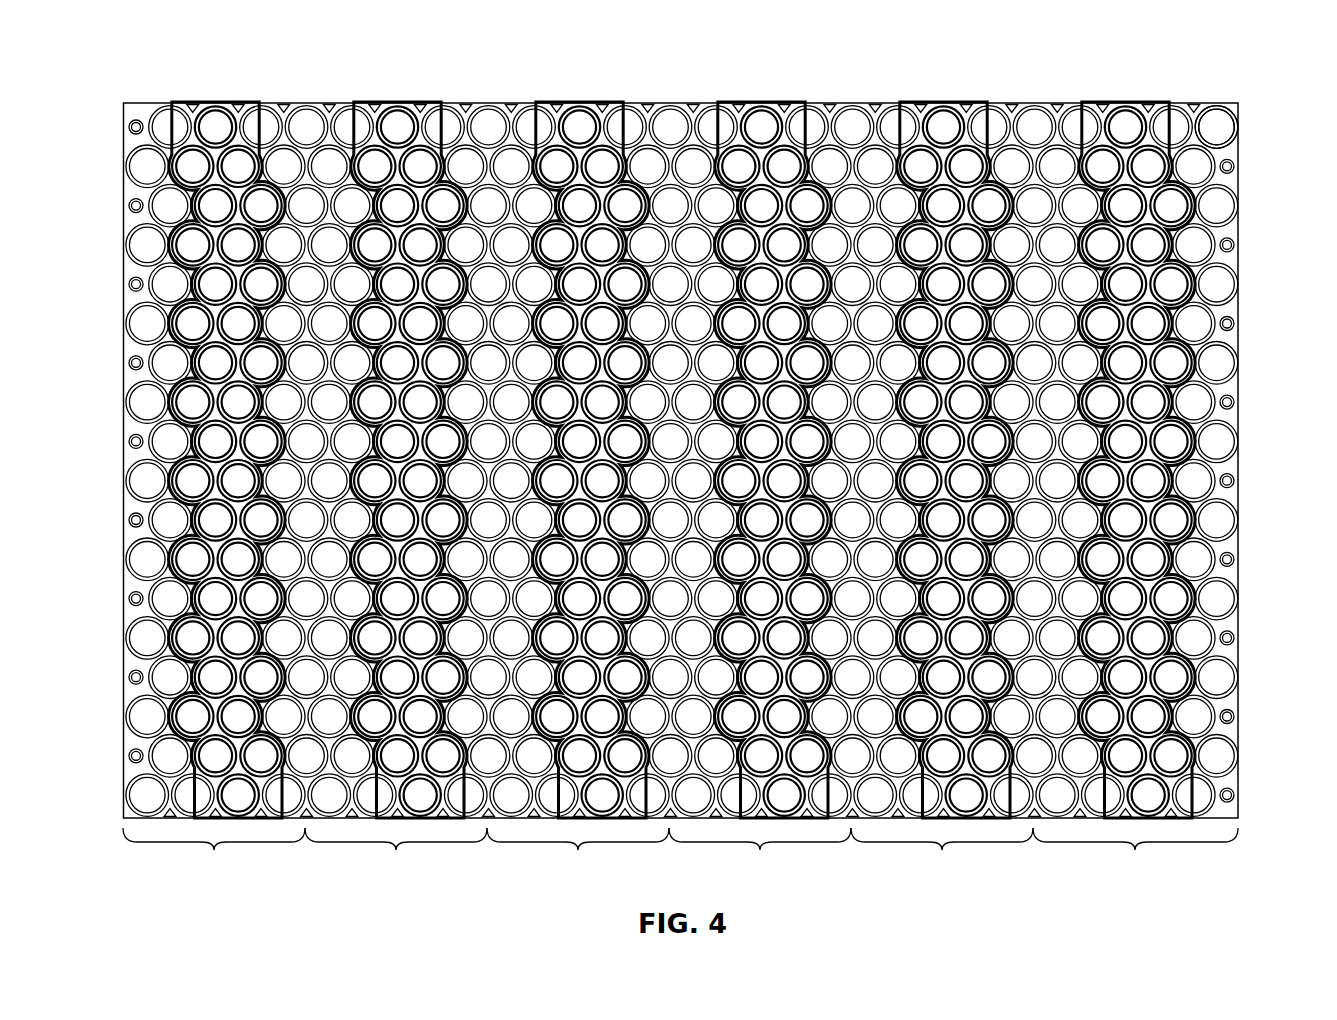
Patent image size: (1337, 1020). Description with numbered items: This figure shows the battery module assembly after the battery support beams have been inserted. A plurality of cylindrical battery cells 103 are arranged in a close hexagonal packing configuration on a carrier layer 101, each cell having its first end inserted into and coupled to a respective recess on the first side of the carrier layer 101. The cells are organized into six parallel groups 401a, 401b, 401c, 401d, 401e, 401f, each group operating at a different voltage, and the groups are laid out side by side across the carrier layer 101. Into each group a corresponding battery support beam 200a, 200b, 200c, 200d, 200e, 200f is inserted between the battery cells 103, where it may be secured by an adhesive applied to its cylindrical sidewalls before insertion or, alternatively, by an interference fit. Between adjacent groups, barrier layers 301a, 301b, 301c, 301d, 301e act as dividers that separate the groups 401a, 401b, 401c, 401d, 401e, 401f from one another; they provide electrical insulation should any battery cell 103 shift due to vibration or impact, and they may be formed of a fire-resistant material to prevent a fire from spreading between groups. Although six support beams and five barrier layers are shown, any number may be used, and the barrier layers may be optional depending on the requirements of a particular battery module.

The carrier layer 101 is at (1240, 167).
The battery cell 103 is at (1220, 118).
The battery support beam 200a is at (192, 104).
The battery support beam 200b is at (375, 104).
The battery support beam 200c is at (557, 104).
The battery support beam 200d is at (740, 104).
The battery support beam 200e is at (917, 104).
The battery support beam 200f is at (1100, 104).
The barrier layer 301a is at (333, 107).
The barrier layer 301b is at (517, 105).
The barrier layer 301c is at (702, 105).
The barrier layer 301d is at (878, 105).
The barrier layer 301e is at (1058, 105).
The parallel group 401a is at (214, 466).
The parallel group 401b is at (396, 466).
The parallel group 401c is at (578, 466).
The parallel group 401d is at (760, 466).
The parallel group 401e is at (942, 466).
The parallel group 401f is at (1135, 466).